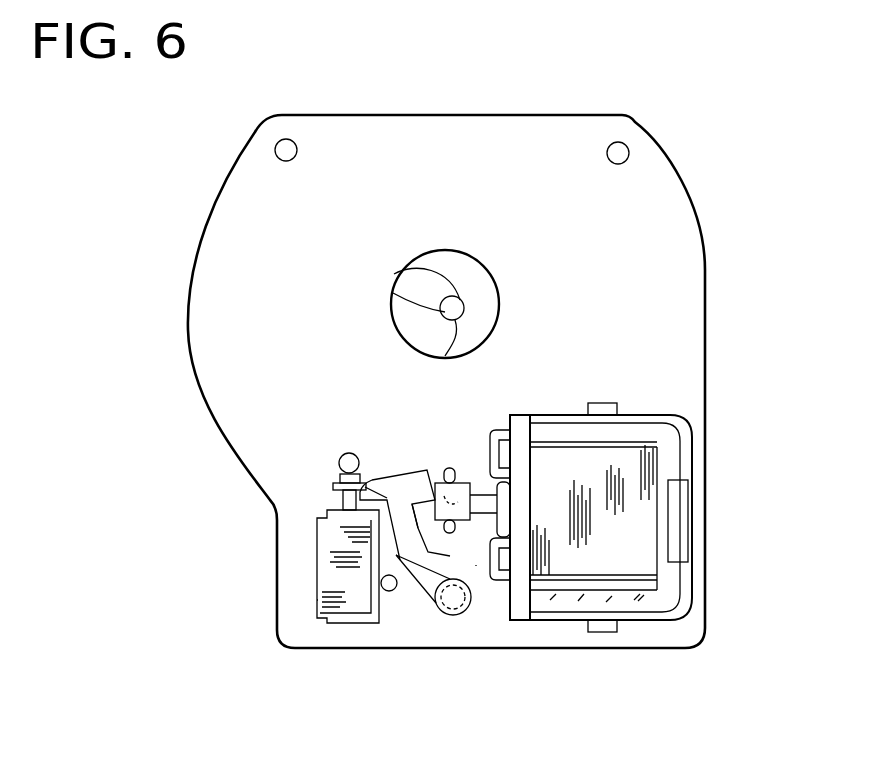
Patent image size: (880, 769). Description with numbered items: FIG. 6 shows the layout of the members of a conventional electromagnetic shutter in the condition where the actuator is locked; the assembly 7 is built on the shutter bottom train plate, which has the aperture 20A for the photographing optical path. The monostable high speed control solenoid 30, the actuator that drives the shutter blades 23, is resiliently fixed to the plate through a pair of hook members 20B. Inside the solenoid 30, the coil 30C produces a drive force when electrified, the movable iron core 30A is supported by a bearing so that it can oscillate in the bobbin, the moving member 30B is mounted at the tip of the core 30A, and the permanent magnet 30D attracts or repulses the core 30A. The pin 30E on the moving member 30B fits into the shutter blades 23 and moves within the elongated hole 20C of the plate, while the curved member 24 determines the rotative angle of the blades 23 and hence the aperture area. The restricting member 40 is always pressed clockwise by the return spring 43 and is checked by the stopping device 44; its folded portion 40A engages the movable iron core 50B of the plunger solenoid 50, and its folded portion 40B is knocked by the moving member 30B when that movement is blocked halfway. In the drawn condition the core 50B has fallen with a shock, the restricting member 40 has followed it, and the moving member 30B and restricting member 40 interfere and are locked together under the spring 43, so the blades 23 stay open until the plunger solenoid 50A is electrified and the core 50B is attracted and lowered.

The drive unit base plate 7 is at (512, 98).
The aperture 20A is at (452, 250).
The hook members 20B is at (617, 405).
The elongated hole 20C is at (477, 567).
The shutter blades 23 is at (480, 288).
The curved member 24 is at (394, 294).
The monostable high speed control solenoid 30 is at (632, 626).
The movable iron core 30A is at (487, 478).
The moving member 30B is at (458, 462).
The coil 30C is at (620, 470).
The permanent magnet 30D is at (640, 600).
The pin 30E is at (470, 525).
The restricting member 40 is at (388, 471).
The folded portion 40A is at (378, 484).
The folded portion 40B is at (428, 470).
The return spring 43 is at (415, 600).
The stopping device 44 is at (340, 458).
The plunger solenoid 50 is at (307, 565).
The plunger solenoid 50A is at (320, 600).
The movable iron core 50B is at (340, 504).